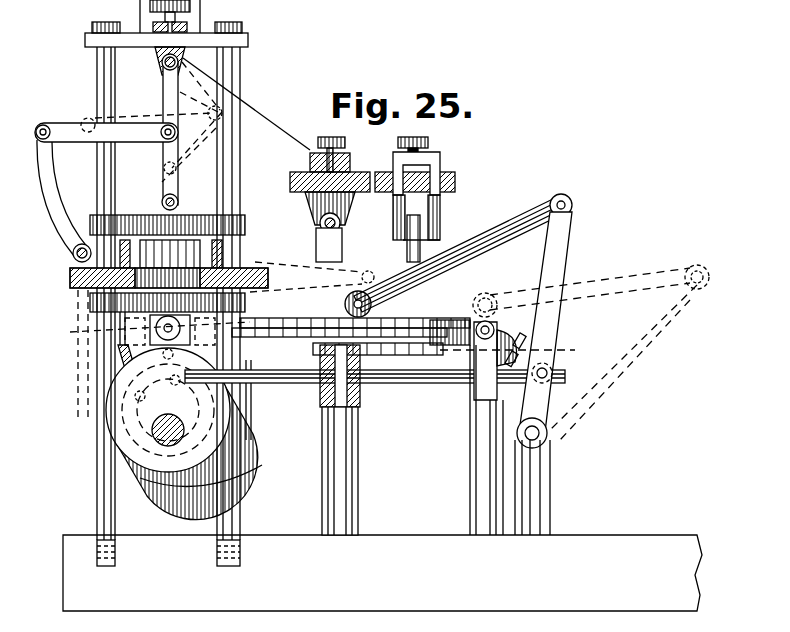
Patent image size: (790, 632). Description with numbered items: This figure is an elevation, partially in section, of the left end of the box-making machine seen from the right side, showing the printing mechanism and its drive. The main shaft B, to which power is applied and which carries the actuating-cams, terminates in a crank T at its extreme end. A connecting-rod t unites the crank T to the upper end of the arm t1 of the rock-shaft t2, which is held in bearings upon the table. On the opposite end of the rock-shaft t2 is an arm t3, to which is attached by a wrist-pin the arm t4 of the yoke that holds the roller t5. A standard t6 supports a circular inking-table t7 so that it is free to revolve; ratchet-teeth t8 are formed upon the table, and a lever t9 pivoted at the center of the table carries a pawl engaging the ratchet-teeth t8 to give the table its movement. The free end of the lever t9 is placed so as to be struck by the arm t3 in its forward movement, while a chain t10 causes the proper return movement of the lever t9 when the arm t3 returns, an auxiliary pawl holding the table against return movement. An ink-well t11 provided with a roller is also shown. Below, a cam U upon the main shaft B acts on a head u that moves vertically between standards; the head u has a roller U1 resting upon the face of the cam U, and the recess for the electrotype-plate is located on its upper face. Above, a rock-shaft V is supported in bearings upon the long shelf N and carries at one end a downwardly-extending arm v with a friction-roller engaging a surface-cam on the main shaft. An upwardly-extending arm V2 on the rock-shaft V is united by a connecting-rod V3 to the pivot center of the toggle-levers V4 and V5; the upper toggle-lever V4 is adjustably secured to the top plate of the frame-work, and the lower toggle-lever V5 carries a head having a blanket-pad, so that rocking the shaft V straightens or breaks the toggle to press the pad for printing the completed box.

The rock-shaft V is at (72, 256).
The upwardly-extending arm V2 is at (50, 216).
The connecting-rod V3 is at (120, 137).
The toggle-lever V4 is at (178, 163).
The toggle-lever V5 is at (163, 95).
The bar or shelf N is at (70, 281).
The head u is at (100, 330).
The downwardly-extending arm v is at (110, 353).
The cam U is at (96, 445).
The roller U1 is at (250, 388).
The main shaft B is at (152, 430).
The crank T is at (184, 403).
The connecting-rod t is at (378, 383).
The arm t1 is at (578, 425).
The rock-shaft t2 is at (542, 438).
The arm t3 is at (560, 252).
The arm of the yoke t4 is at (468, 258).
The roller t5 is at (345, 310).
The standard t6 is at (352, 450).
The circular inking-table t7 is at (312, 270).
The ratchet-teeth t8 is at (300, 333).
The lever t9 is at (407, 355).
The chain t10 is at (533, 345).
The ink-well t11 is at (502, 320).